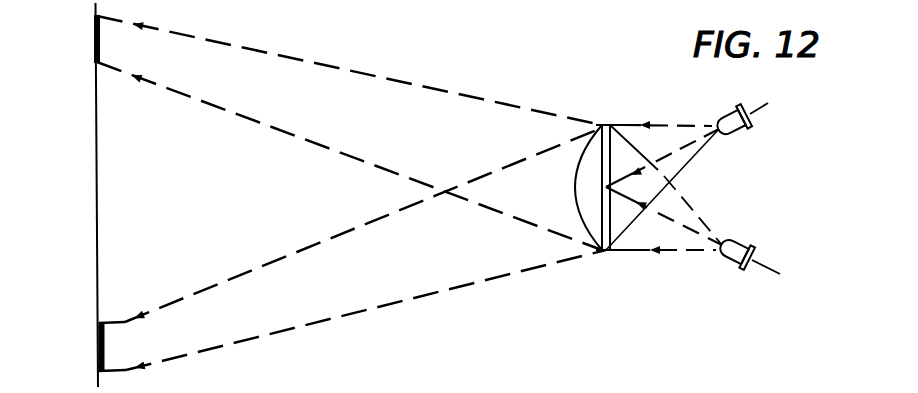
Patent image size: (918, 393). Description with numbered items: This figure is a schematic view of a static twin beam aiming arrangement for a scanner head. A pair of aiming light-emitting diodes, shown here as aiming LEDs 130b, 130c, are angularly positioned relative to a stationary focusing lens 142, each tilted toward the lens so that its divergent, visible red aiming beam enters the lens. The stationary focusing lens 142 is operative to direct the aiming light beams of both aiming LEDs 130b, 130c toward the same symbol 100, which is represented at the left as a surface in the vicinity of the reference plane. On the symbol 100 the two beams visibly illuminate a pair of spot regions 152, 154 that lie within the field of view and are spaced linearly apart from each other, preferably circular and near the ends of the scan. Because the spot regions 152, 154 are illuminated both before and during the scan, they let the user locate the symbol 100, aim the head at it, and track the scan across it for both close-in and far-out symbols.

The symbol 100 is at (94, 162).
The spot region 152 is at (99, 355).
The spot region 154 is at (97, 38).
The stationary focusing lens 142 is at (603, 252).
The aiming LED 130b is at (742, 237).
The light emitting diode 130c is at (723, 110).